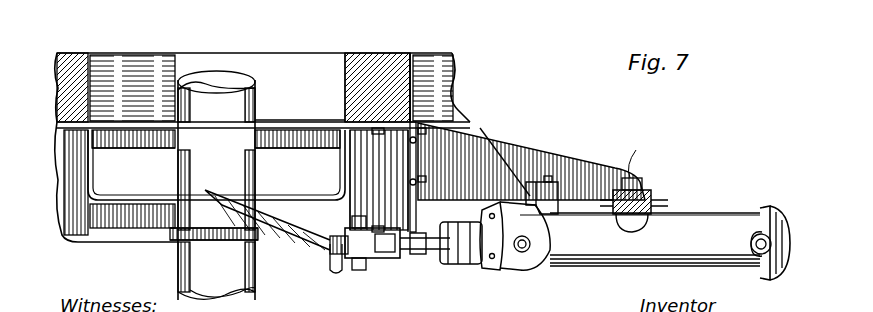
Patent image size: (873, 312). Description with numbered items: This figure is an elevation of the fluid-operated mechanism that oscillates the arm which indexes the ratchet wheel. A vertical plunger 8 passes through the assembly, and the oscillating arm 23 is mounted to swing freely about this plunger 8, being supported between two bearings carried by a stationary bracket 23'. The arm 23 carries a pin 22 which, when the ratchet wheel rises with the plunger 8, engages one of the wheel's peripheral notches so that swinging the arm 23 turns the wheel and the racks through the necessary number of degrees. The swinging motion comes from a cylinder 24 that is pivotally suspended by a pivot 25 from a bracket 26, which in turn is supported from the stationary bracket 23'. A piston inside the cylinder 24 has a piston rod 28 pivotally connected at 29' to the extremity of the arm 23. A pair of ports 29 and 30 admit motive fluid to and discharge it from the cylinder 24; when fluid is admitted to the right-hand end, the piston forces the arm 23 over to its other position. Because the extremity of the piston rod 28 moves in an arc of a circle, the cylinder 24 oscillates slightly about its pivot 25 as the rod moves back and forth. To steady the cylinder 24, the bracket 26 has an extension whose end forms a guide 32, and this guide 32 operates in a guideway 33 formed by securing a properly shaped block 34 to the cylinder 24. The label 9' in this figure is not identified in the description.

The plunger 8 is at (190, 282).
The plate 9' is at (216, 122).
The stationary bracket 23' is at (200, 198).
The oscillating arm 23 is at (302, 232).
The pin 22 is at (334, 260).
The cylinder 24 is at (644, 262).
The pivot 25 is at (652, 192).
The bracket 26 is at (540, 158).
The piston rod 28 is at (440, 250).
The port 29 is at (756, 253).
The pivotal connection 29' is at (388, 177).
The port 30 is at (490, 258).
The guide 32 is at (555, 185).
The guideway 33 is at (538, 255).
The block 34 is at (556, 188).